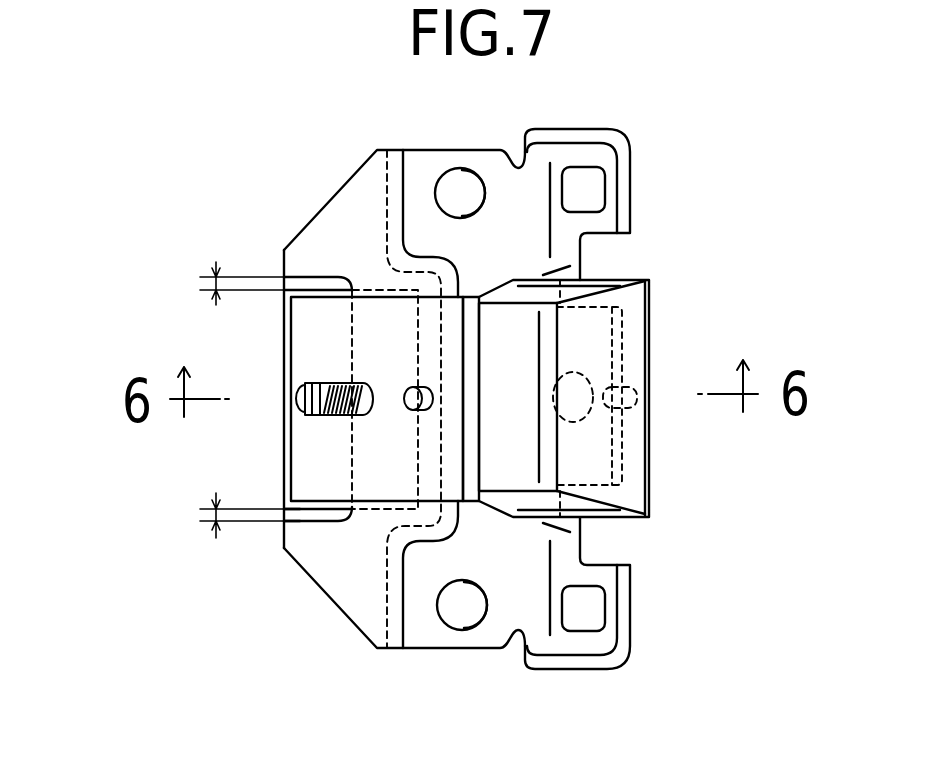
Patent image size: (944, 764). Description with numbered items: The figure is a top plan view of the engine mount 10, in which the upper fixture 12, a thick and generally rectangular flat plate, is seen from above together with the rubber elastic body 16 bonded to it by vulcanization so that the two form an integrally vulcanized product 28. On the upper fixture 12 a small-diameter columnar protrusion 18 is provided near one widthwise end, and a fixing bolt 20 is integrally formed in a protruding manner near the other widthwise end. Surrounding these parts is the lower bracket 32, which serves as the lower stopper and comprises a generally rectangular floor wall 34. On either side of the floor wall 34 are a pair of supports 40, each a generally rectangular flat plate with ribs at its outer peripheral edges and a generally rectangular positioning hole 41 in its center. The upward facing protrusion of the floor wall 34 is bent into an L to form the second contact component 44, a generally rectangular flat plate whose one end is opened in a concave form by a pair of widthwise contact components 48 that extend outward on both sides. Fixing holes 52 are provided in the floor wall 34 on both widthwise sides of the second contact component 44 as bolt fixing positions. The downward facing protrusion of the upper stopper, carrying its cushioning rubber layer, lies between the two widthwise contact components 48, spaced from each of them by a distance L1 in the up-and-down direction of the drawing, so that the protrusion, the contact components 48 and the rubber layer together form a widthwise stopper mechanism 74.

The engine mount 10 is at (449, 387).
The upper fixture 12 is at (312, 462).
The rubber elastic body 16 is at (603, 343).
The protrusion 18 is at (411, 392).
The fixing bolt 20 is at (342, 386).
The integrally vulcanized product 28 is at (592, 370).
The lower bracket 32 is at (423, 151).
The floor wall 34 is at (503, 533).
The support 40 is at (605, 220).
The positioning hole 41 is at (586, 176).
The second contact component 44 is at (368, 520).
The widthwise contact component 48 is at (310, 273).
The fixing hole 52 is at (452, 176).
The stopper mechanism 74 is at (277, 496).
The distance L1 is at (229, 400).